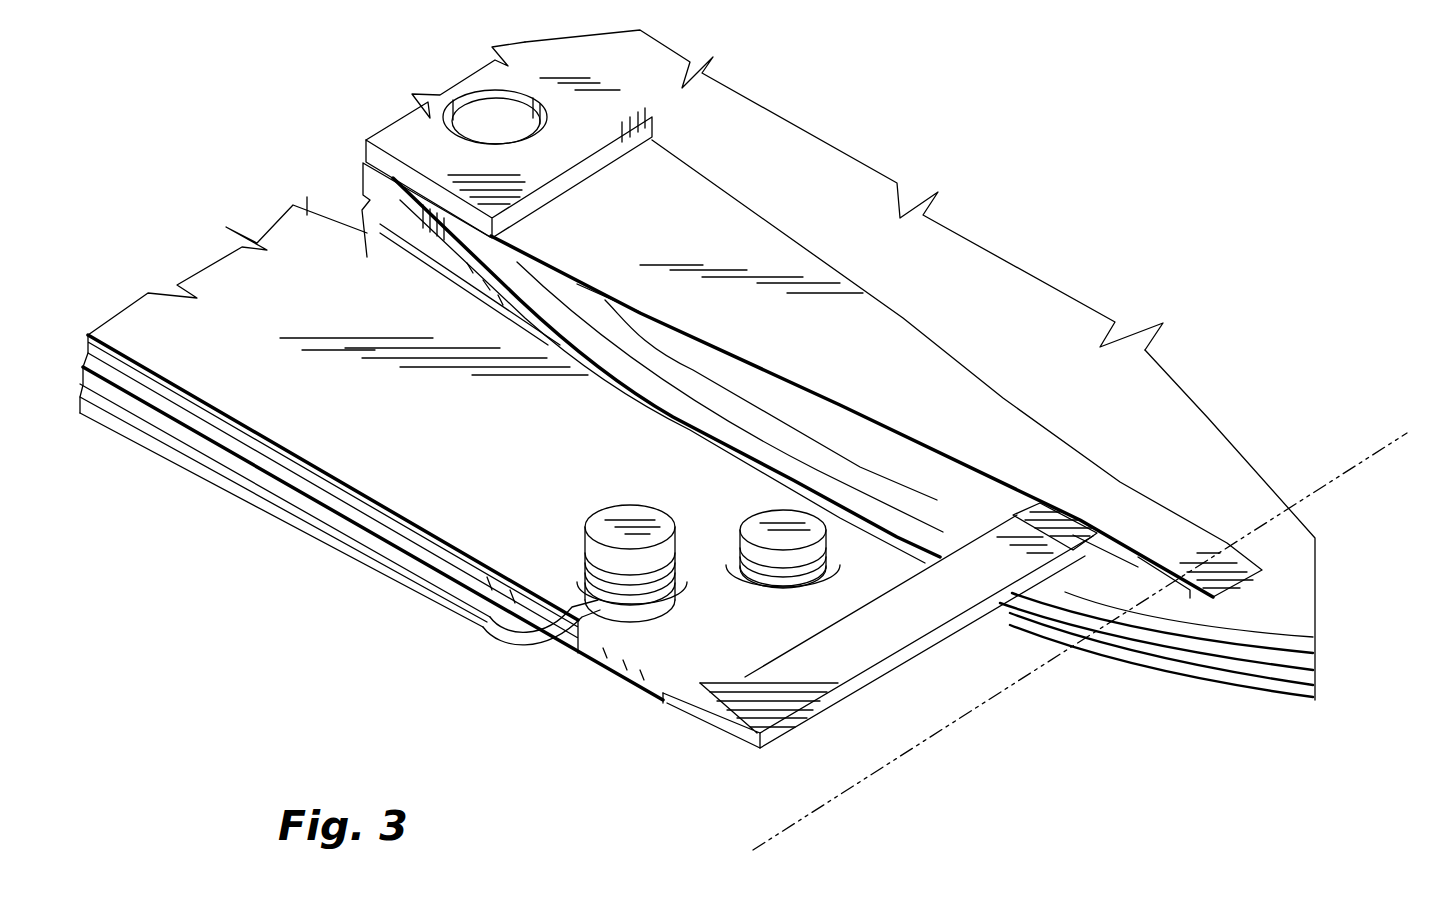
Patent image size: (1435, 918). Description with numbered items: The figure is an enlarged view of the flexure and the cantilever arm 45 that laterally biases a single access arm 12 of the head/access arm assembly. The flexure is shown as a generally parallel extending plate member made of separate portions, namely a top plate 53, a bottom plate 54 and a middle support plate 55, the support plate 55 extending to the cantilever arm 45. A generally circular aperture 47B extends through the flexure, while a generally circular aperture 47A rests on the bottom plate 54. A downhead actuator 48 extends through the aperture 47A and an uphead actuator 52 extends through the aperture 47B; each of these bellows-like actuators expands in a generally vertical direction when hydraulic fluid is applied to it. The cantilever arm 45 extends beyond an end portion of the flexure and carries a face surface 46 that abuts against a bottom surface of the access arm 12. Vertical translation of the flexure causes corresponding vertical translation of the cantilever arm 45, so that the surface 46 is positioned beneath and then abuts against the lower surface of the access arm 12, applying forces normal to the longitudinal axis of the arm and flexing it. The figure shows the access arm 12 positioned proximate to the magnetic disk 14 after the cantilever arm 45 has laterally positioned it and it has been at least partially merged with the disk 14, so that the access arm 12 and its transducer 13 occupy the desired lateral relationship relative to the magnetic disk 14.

The access arm 12 is at (817, 253).
The transducer 13 is at (1180, 583).
The magnetic disk 14 is at (1208, 418).
The cantilever arm 45 is at (870, 642).
The face surface 46 is at (1110, 547).
The aperture 47A is at (657, 613).
The aperture 47B is at (727, 548).
The downhead actuator 48 is at (585, 523).
The uphead actuator 52 is at (800, 548).
The top plate 53 is at (128, 358).
The bottom plate 54 is at (295, 483).
The support plate 55 is at (580, 653).